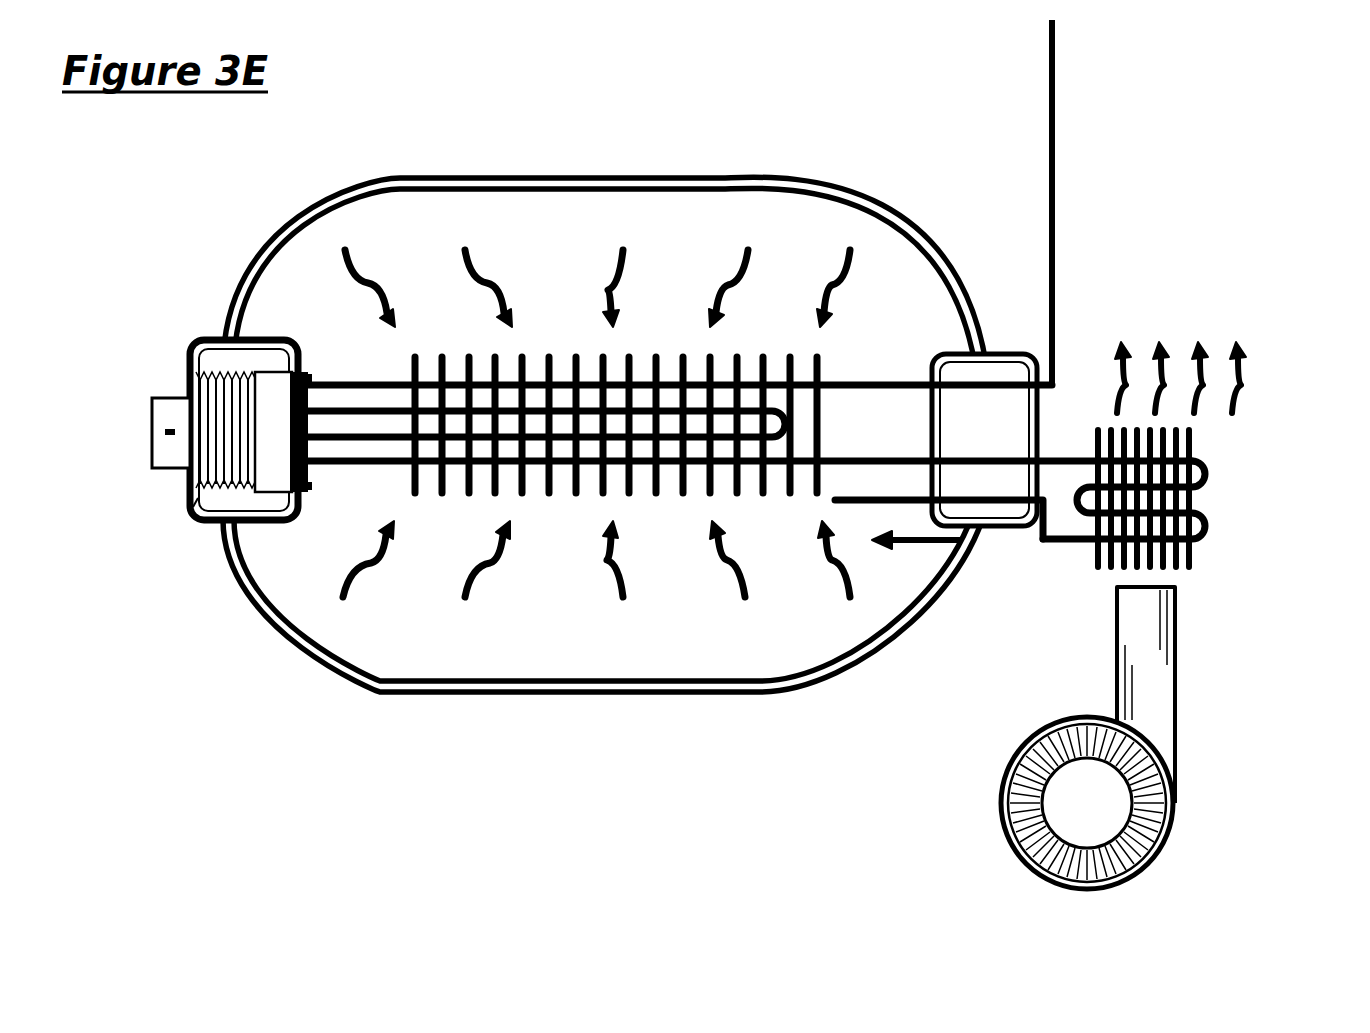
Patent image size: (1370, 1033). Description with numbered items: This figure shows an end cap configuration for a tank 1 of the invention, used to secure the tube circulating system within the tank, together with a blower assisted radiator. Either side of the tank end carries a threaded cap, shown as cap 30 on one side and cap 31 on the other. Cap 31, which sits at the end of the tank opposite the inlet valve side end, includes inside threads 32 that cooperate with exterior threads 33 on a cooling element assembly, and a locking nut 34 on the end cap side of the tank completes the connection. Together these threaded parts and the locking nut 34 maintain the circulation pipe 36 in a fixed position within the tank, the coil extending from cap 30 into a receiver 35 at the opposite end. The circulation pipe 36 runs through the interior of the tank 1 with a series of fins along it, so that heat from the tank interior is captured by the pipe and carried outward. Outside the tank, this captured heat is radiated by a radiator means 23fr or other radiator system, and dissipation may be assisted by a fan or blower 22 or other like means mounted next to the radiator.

The tank 1 is at (263, 623).
The fan or blower 22 is at (1175, 712).
The radiator means 23fr is at (1190, 565).
The threaded cap 30 is at (1008, 352).
The threaded cap 31 is at (200, 340).
The inside threads 32 is at (193, 507).
The exterior threads 33 is at (190, 360).
The locking nut 34 is at (178, 432).
The receiver 35 is at (298, 348).
The circulation pipe 36 is at (347, 380).